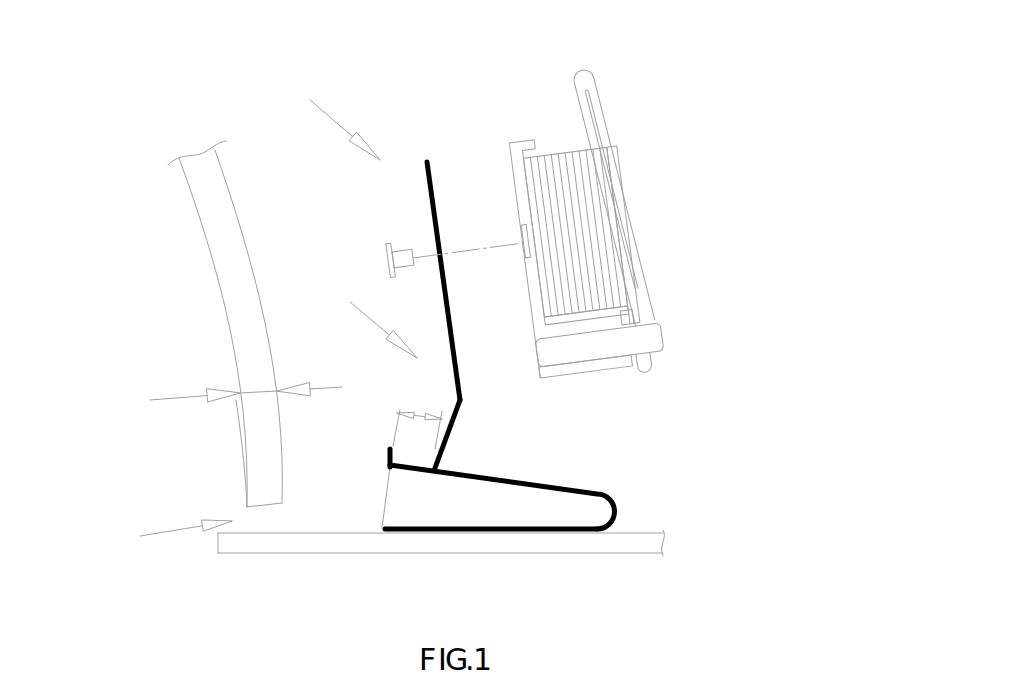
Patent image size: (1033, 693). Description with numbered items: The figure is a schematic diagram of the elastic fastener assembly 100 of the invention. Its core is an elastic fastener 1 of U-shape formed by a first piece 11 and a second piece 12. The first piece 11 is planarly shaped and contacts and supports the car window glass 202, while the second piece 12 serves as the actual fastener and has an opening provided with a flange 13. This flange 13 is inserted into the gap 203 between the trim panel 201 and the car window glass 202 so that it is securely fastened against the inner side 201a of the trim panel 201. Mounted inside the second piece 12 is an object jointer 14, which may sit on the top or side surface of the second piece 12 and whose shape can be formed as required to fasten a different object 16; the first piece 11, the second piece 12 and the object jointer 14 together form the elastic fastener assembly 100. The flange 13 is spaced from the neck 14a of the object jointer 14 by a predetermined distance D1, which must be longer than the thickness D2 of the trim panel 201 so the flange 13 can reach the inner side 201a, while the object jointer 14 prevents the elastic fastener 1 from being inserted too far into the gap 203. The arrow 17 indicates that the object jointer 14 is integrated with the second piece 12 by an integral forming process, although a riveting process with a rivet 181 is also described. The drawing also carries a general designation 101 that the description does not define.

The elastic fastener 1 is at (474, 394).
The first piece 11 is at (523, 535).
The second piece 12 is at (533, 483).
The flange 13 is at (388, 455).
The object jointer 14 is at (435, 225).
The neck 14a is at (452, 428).
The object 16 is at (630, 226).
The arrow 17 is at (365, 321).
The elastic fastener assembly 100 is at (319, 117).
The motor strap 101 is at (672, 90).
The rivet 181 is at (388, 258).
The trim panel 201 is at (208, 245).
The inner side 201a is at (243, 479).
The car window glass 202 is at (340, 553).
The gap 203 is at (164, 534).
The predetermined distance D1 is at (417, 414).
The thickness D2 is at (246, 379).